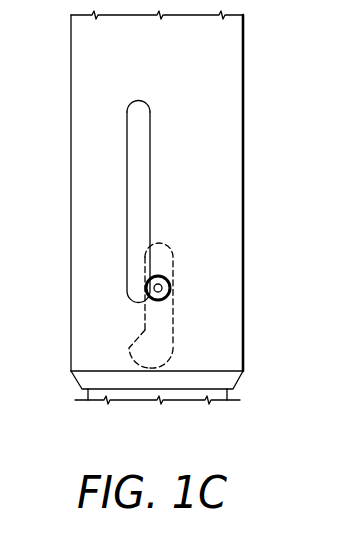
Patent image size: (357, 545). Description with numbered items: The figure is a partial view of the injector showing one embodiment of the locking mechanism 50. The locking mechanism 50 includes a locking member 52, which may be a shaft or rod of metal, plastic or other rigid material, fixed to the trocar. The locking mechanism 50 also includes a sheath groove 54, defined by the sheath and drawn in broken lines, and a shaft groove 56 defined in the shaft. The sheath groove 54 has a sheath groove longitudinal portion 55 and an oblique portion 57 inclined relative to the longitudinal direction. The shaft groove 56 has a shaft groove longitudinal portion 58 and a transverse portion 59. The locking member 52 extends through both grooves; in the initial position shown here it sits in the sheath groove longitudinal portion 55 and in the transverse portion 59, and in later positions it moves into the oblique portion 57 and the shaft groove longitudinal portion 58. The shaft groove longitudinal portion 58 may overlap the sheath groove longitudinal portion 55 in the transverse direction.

The locking mechanism 50 is at (186, 281).
The locking member 52 is at (148, 283).
The sheath groove 54 is at (164, 364).
The sheath groove longitudinal portion 55 is at (150, 318).
The shaft groove 56 is at (142, 100).
The oblique portion 57 is at (141, 360).
The shaft groove longitudinal portion 58 is at (142, 167).
The transverse portion 59 is at (171, 299).